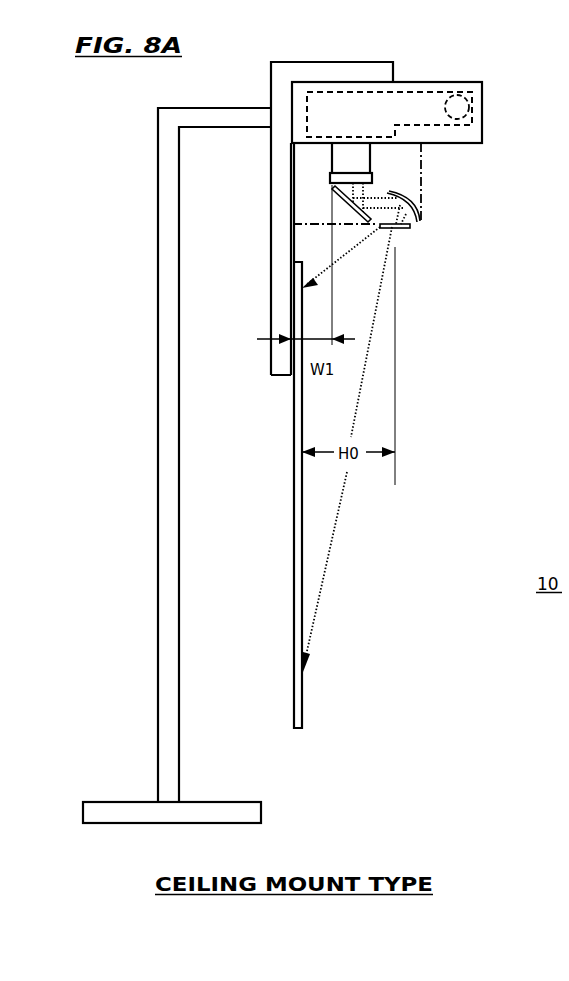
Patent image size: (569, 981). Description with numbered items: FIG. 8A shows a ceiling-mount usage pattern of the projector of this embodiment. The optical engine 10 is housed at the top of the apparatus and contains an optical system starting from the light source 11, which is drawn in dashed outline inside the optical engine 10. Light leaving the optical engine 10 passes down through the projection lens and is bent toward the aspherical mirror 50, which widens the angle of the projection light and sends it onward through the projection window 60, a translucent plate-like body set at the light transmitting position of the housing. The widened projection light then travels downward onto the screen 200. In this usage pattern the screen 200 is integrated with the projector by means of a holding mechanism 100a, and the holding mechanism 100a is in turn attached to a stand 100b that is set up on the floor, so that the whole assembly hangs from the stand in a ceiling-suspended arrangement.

The optical engine 10 is at (428, 130).
The light source 11 is at (452, 96).
The aspherical mirror 50 is at (410, 197).
The projection window 60 is at (400, 230).
The holding mechanism 100a is at (271, 173).
The stand 100b is at (167, 277).
The screen 200 is at (292, 569).